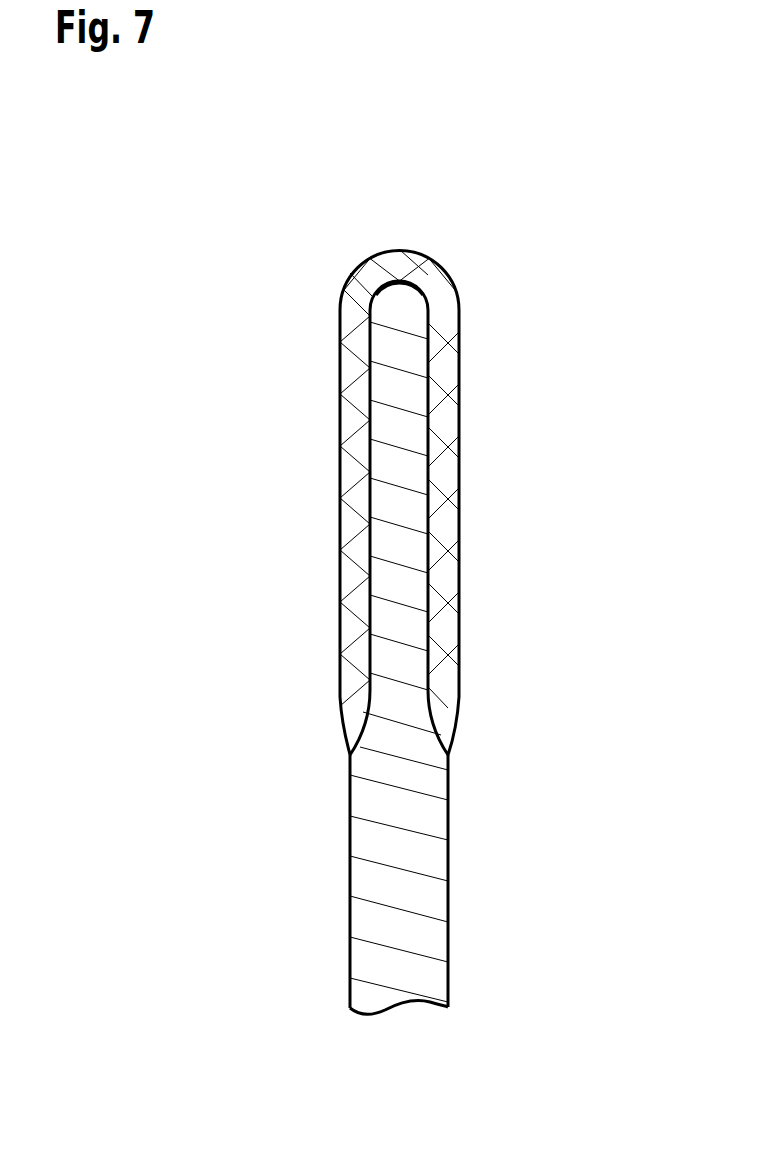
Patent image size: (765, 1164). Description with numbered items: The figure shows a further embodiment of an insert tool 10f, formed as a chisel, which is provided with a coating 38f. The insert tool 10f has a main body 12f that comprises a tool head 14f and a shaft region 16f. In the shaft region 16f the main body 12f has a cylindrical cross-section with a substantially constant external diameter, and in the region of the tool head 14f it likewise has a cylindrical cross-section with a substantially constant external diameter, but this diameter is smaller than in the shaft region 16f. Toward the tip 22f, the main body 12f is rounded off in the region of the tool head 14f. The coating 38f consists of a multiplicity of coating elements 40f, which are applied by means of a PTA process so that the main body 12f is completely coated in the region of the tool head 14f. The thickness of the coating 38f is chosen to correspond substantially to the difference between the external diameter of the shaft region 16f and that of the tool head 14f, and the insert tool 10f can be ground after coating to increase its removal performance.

The insert tool 10f is at (209, 218).
The tool head 14f is at (273, 508).
The shaft region 16f is at (273, 828).
The tip 22f is at (400, 282).
The coating 38f is at (486, 322).
The coating elements 40f is at (443, 428).
The main body 12f is at (433, 830).